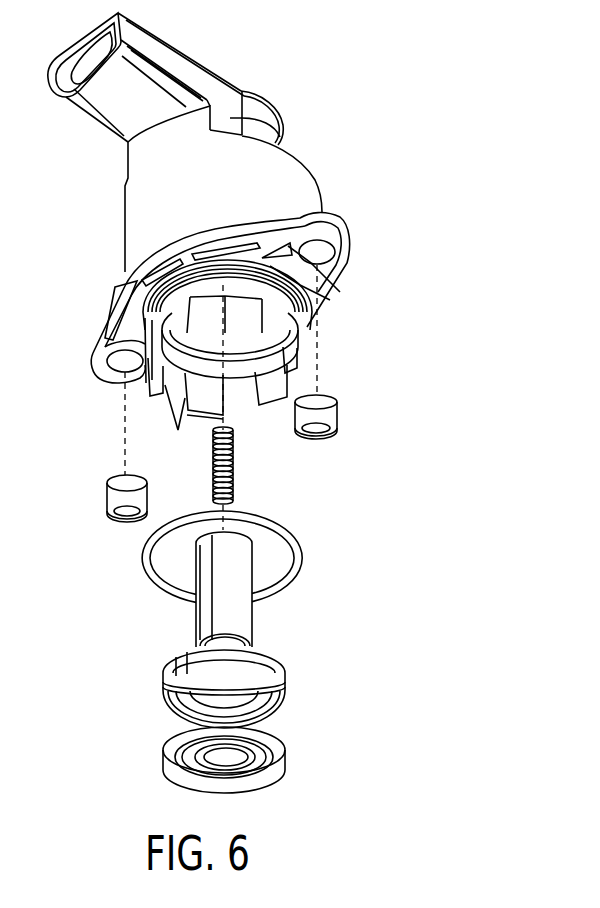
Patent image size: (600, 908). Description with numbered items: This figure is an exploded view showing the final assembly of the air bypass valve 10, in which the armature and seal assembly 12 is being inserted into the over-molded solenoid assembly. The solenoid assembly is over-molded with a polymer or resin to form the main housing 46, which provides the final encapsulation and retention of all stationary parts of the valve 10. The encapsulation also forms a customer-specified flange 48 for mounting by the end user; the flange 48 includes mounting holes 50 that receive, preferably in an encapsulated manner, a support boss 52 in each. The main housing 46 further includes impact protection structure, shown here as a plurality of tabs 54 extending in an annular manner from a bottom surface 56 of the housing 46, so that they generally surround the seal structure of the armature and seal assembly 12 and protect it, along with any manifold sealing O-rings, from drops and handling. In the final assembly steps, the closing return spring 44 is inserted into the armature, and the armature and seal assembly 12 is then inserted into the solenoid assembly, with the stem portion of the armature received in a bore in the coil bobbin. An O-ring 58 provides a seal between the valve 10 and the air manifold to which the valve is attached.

The air bypass valve 10 is at (268, 70).
The armature and seal assembly 12 is at (275, 635).
The closing return spring 44 is at (237, 468).
The main housing 46 is at (124, 205).
The flange 48 is at (107, 333).
The mounting holes 50 is at (116, 376).
The support boss 52 is at (107, 495).
The tabs 54 is at (195, 407).
The bottom surface 56 is at (285, 318).
The O-ring 58 is at (152, 591).